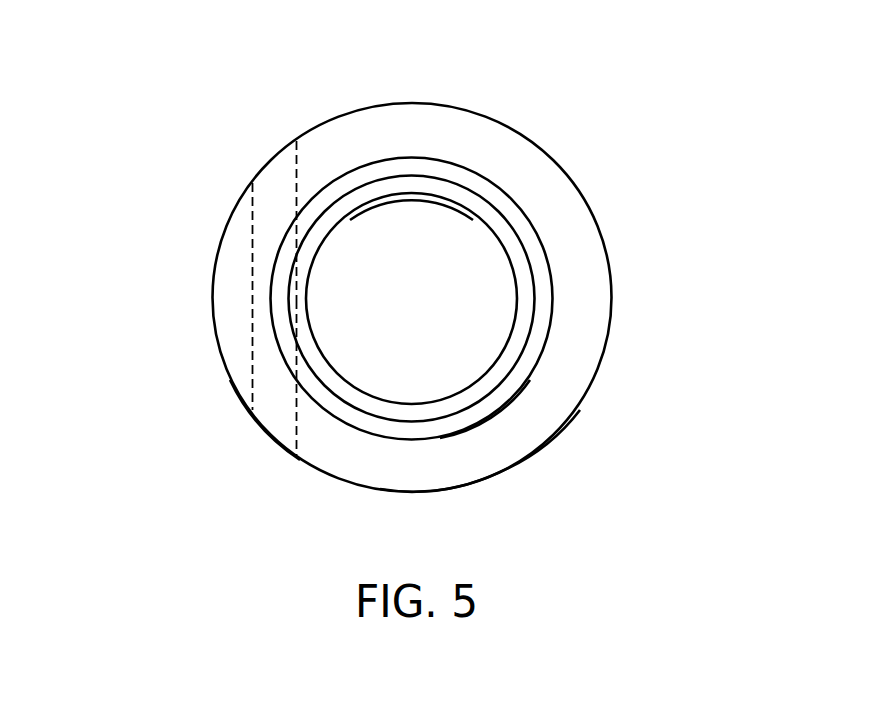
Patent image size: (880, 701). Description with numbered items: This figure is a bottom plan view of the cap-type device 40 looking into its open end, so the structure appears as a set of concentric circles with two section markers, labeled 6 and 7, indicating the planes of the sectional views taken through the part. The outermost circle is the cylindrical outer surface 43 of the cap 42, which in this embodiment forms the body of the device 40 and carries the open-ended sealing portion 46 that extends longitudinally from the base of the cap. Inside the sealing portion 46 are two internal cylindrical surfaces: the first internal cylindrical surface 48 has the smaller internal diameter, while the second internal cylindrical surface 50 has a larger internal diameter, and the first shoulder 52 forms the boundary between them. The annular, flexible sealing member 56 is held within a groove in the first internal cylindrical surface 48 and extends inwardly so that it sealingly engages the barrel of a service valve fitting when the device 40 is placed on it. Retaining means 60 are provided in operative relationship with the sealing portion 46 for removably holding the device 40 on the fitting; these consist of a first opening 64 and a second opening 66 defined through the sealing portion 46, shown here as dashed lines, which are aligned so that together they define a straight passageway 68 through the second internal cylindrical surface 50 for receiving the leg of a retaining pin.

The device 40 is at (632, 120).
The cap 42 is at (465, 490).
The cylindrical outer surface 43 is at (542, 448).
The sealing portion 46 is at (568, 202).
The first internal cylindrical surface 48 is at (522, 247).
The second internal cylindrical surface 50 is at (490, 410).
The first shoulder 52 is at (523, 370).
The sealing member 56 is at (453, 192).
The retaining means 60 is at (252, 224).
The first opening 64 is at (272, 170).
The second opening 66 is at (278, 432).
The passageway 68 is at (268, 362).
The section line 6- 6 is at (190, 298).
The section line 7- 7 is at (412, 83).